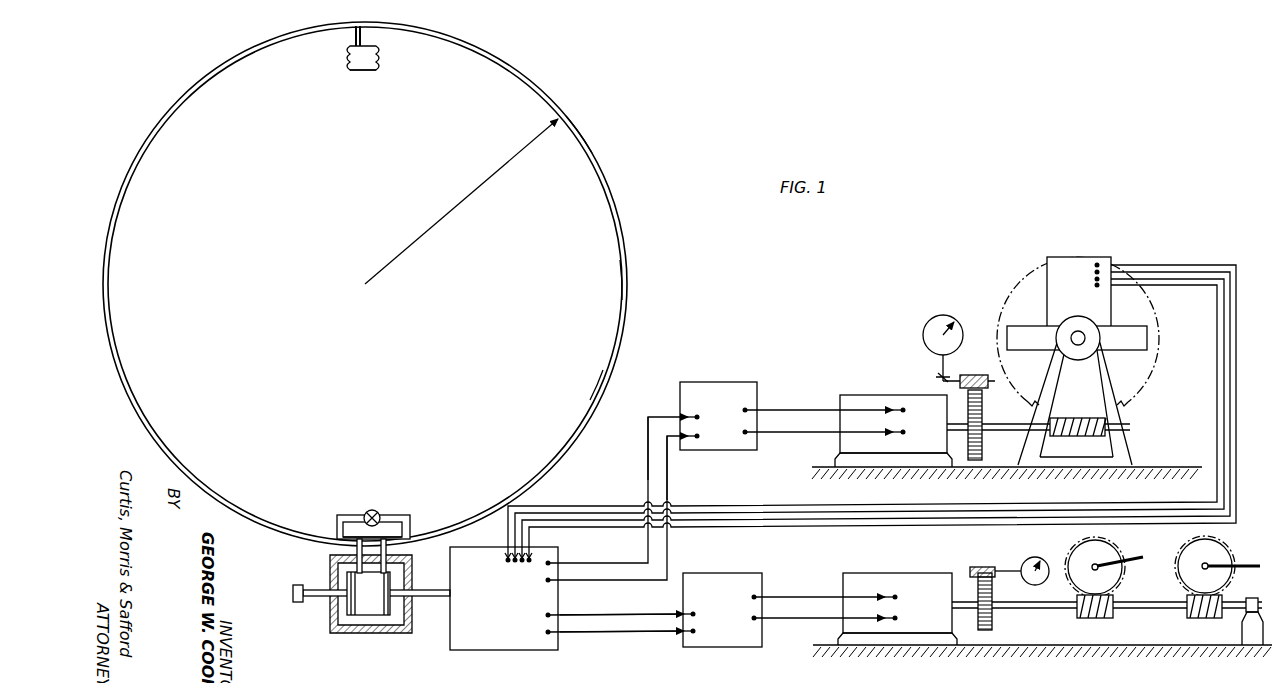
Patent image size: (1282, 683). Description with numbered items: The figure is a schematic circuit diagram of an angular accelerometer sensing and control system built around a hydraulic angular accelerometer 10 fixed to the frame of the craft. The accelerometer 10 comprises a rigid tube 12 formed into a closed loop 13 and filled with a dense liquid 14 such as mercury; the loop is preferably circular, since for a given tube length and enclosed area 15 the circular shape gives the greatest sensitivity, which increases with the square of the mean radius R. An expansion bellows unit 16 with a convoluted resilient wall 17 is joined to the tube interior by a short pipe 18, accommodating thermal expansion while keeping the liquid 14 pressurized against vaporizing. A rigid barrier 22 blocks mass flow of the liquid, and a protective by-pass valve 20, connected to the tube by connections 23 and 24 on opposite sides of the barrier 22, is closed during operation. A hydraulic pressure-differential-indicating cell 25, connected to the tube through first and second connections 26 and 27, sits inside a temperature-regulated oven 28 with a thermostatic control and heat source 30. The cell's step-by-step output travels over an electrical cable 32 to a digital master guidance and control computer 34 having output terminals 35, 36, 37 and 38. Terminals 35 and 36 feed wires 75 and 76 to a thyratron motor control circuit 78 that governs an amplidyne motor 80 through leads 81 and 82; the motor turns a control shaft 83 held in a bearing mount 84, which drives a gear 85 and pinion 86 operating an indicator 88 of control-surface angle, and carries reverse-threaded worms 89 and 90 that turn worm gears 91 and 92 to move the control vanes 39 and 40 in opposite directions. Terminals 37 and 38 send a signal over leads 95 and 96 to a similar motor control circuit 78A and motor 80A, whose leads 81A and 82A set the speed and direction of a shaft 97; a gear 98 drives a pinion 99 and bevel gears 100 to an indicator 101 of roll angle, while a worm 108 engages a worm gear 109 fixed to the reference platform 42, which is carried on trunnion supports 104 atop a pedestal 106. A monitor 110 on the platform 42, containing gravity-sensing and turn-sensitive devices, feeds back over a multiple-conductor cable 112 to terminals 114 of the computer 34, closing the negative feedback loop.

The hydraulic angular accelerometer 10 is at (555, 82).
The rigid tube 12 is at (606, 194).
The closed path or loop 13 is at (573, 118).
The dense liquid 14 is at (630, 276).
The area enclosed within the loop 15 is at (598, 346).
The mean radius of the loop R is at (461, 201).
The expansion bellows unit 16 is at (352, 73).
The convoluted resilient wall 17 is at (380, 60).
The short pipe 18 is at (355, 40).
The protective by-pass valve 20 is at (366, 514).
The rigid barrier 22 is at (367, 544).
The first by-pass connection 23 is at (337, 525).
The second by-pass connection 24 is at (405, 530).
The hydraulic pressure-differential-indicating cell 25 is at (370, 617).
The first connection 26 is at (356, 548).
The second connection 27 is at (387, 548).
The precision temperature-regulated oven 28 is at (405, 633).
The thermostatic temperature control and heat source 30 is at (297, 598).
The electrical cable 32 is at (432, 599).
The master guidance and control computer 34 is at (492, 652).
The first output terminal 35 is at (546, 616).
The second output terminal 36 is at (548, 635).
The third output terminal 37 is at (550, 563).
The fourth output terminal 38 is at (550, 581).
The computer terminals 114 is at (508, 569).
The multiple-conductor cable 112 is at (779, 504).
The control lead 95 is at (647, 445).
The control lead 96 is at (668, 492).
The output wire 75 is at (641, 613).
The output wire 76 is at (604, 634).
The motor control circuit 78 is at (738, 650).
The second motor control circuit 78A is at (704, 381).
The amplidyne torque-amplifying motor 80 is at (876, 574).
The platform drive motor 80A is at (878, 382).
The control lead 81 is at (812, 601).
The control lead 82 is at (818, 618).
The control lead 81A is at (821, 403).
The control lead 82A is at (778, 433).
The control shaft 83 is at (1032, 611).
The bearing mount 84 is at (1244, 620).
The gear 85 is at (987, 629).
The pinion 86 is at (992, 567).
The indicator 88 is at (1045, 560).
The reverse threaded worm 89 is at (1082, 620).
The reverse threaded worm 90 is at (1190, 618).
The worm gear 91 is at (1135, 548).
The worm gear 92 is at (1234, 556).
The control vane 39 is at (1136, 562).
The control vane 40 is at (1245, 562).
The shaft 97 is at (988, 437).
The gear 98 is at (983, 420).
The pinion 99 is at (988, 375).
The bevel gears 100 is at (938, 377).
The indicator 101 is at (932, 331).
The trunnion supports 104 is at (1080, 346).
The pedestal 106 is at (1112, 387).
The worm 108 is at (1095, 440).
The worm gear 109 is at (1012, 295).
The monitor 110 is at (1073, 257).
The reference platform 42 is at (1134, 326).